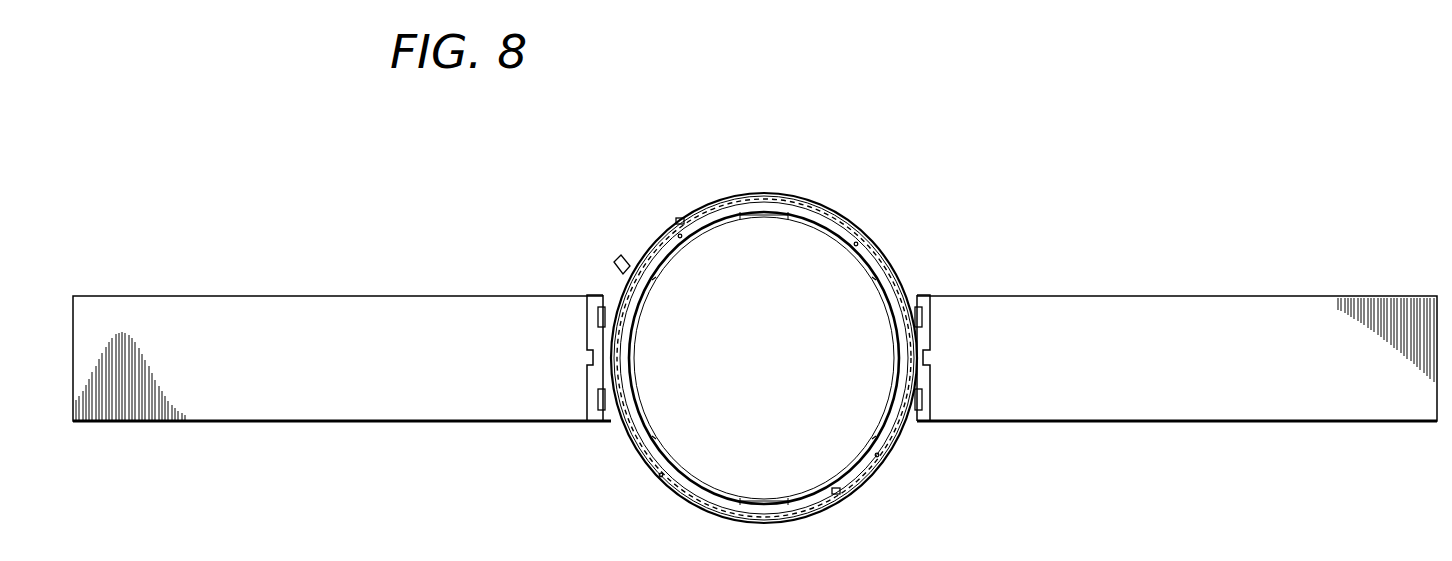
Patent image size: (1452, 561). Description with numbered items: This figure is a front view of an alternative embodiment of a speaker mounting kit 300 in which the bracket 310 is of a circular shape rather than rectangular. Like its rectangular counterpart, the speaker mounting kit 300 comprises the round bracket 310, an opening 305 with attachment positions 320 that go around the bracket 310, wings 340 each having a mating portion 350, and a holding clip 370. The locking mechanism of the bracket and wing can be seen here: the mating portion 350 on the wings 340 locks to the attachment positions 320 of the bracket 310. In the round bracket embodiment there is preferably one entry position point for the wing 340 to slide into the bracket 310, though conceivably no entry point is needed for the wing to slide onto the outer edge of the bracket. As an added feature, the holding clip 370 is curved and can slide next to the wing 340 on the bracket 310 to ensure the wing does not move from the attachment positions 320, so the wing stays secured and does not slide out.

The speaker mounting kit 300 is at (1075, 73).
The opening 305 is at (830, 447).
The bracket 310 is at (812, 213).
The attachment positions 320 is at (607, 290).
The wings 340 is at (278, 307).
The mating portion 350 is at (593, 380).
The holding clip 370 is at (618, 272).